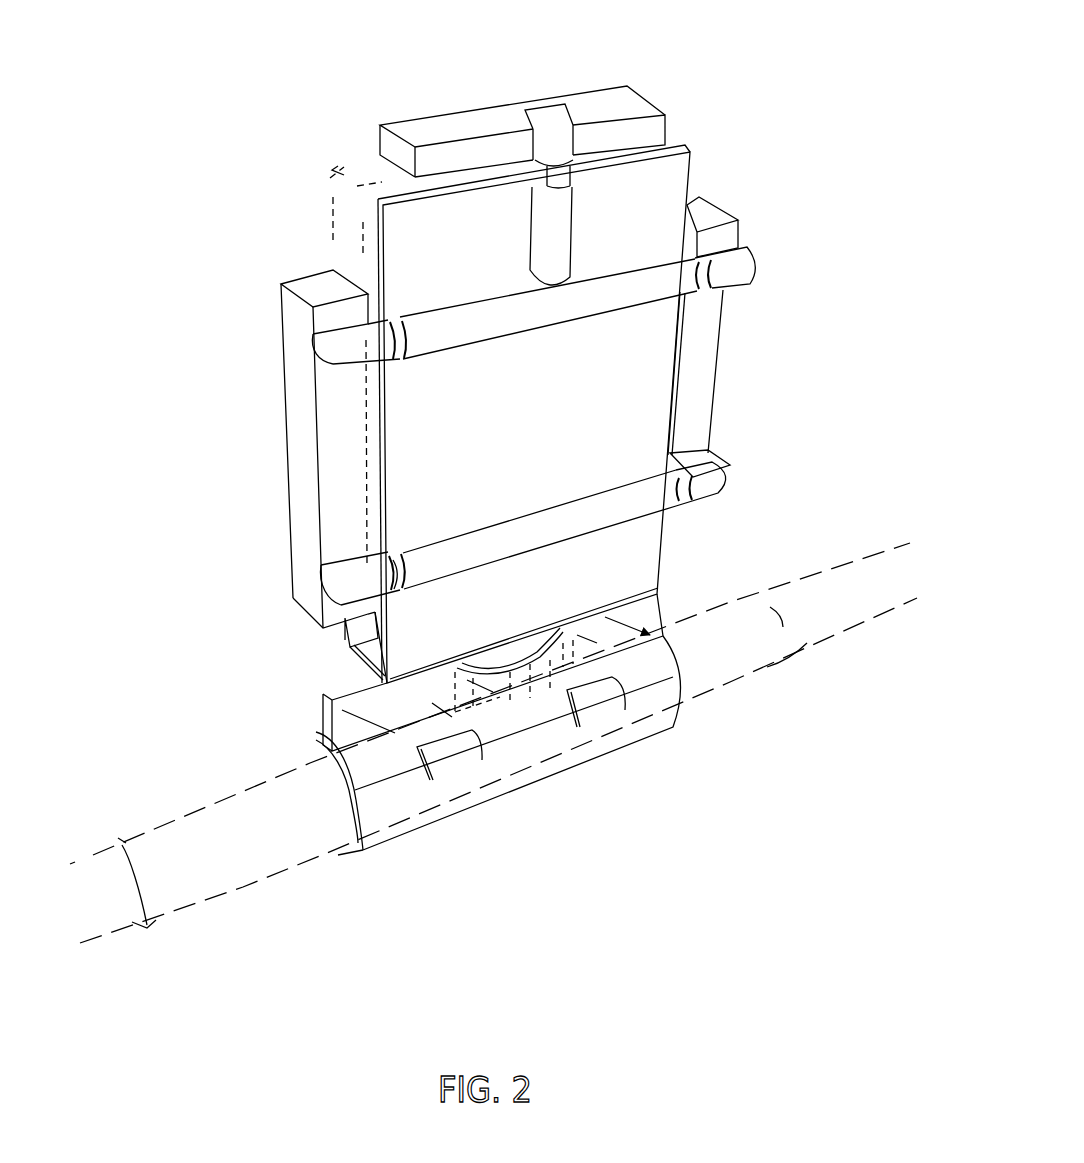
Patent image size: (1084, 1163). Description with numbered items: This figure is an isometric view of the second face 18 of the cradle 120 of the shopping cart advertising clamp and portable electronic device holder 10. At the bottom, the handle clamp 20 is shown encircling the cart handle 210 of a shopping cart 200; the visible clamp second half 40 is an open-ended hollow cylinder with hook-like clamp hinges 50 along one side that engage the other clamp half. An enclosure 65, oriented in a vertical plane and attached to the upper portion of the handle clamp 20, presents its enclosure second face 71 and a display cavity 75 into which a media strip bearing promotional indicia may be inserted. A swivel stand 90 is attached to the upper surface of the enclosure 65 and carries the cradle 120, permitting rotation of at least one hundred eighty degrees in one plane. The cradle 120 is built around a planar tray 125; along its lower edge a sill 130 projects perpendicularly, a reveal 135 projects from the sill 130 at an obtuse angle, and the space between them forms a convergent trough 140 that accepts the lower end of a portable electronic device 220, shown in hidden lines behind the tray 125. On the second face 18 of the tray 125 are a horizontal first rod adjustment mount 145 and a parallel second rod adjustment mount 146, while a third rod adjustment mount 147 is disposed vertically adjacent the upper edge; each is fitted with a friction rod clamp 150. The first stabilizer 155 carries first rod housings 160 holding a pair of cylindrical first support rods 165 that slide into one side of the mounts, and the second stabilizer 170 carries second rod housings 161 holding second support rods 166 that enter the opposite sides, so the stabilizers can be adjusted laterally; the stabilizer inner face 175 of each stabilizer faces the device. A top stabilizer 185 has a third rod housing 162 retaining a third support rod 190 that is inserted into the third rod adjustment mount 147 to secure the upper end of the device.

The shopping cart advertising clamp and portable electronic device holder 10 is at (265, 155).
The second face 18 is at (643, 433).
The handle clamp 20 is at (433, 840).
The clamp second half 40 is at (543, 773).
The clamp hinges 50 is at (457, 748).
The enclosure 65 is at (673, 745).
The enclosure second face 71 is at (655, 636).
The display cavity 75 is at (323, 737).
The swivel stand 90 is at (607, 623).
The cradle 120 is at (785, 145).
The tray 125 is at (380, 260).
The sill 130 is at (375, 665).
The reveal 135 is at (342, 637).
The trough 140 is at (368, 630).
The first rod adjustment mount 145 is at (613, 303).
The second rod adjustment mount 146 is at (588, 522).
The third rod adjustment mount 147 is at (565, 228).
The rod clamp 150 is at (393, 582).
The first stabilizer 155 is at (300, 474).
The first rod housings 160 is at (322, 357).
The second rod housings 161 is at (750, 268).
The third rod housing 162 is at (555, 125).
The first support rods 165 is at (392, 350).
The second support rods 166 is at (723, 290).
The second stabilizer 170 is at (707, 375).
The stabilizer inner face 175 is at (677, 400).
The top stabilizer 185 is at (462, 120).
The third support rod 190 is at (562, 170).
The shopping cart 200 is at (837, 632).
The cart handle 210 is at (710, 683).
The portable electronic device 220 is at (355, 195).